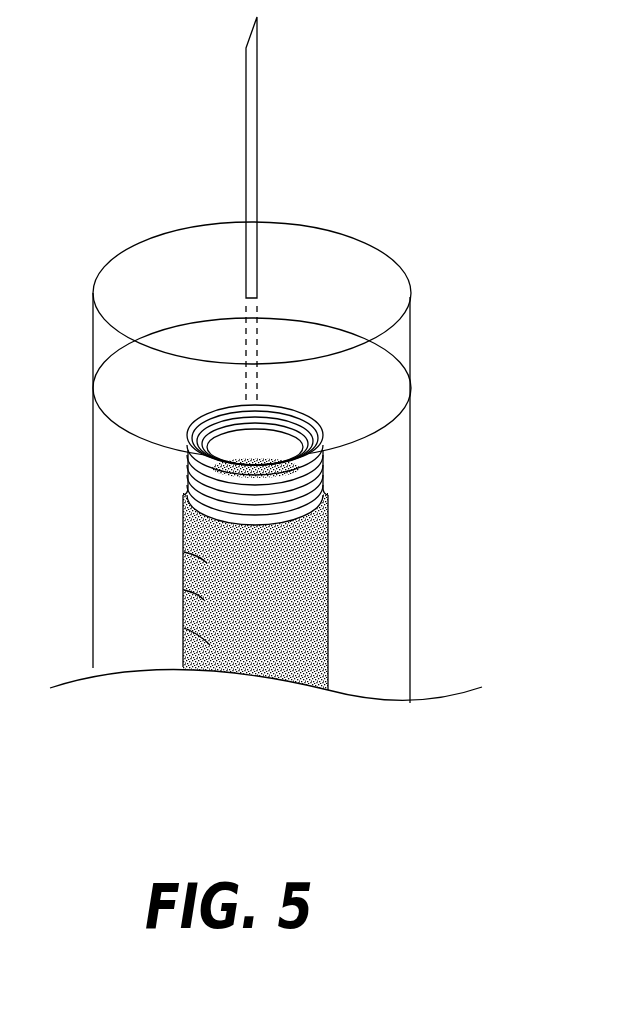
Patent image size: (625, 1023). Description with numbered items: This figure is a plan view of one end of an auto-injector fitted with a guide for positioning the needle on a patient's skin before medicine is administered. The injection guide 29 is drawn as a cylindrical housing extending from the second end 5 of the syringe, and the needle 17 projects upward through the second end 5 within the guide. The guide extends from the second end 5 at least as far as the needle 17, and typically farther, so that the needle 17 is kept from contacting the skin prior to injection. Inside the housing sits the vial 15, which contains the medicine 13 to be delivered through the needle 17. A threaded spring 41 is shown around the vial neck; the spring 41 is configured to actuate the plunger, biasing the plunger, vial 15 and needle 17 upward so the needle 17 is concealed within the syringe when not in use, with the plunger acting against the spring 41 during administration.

The second end 5 is at (385, 435).
The medicine 13 is at (263, 650).
The vial 15 is at (268, 591).
The needle 17 is at (252, 180).
The injection guide 29 is at (412, 350).
The spring 41 is at (188, 494).